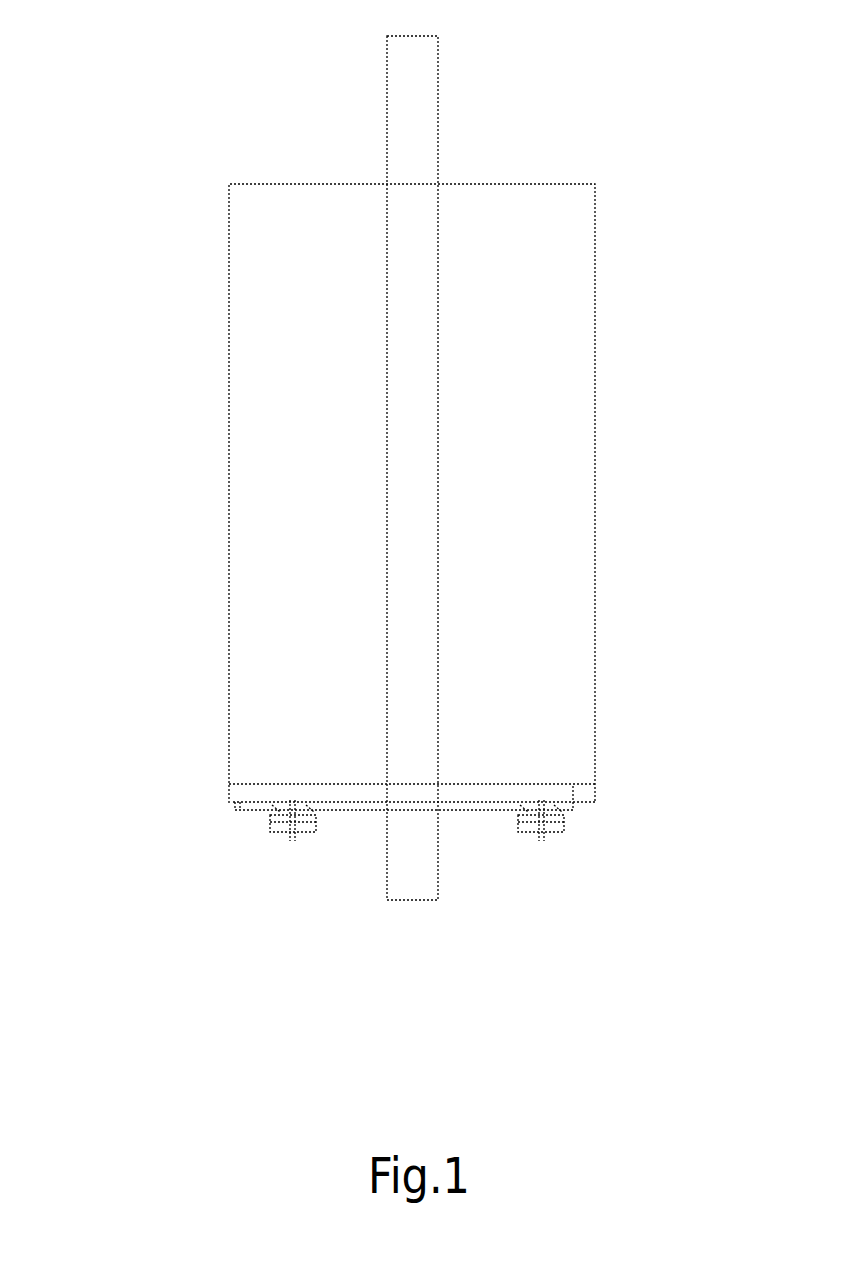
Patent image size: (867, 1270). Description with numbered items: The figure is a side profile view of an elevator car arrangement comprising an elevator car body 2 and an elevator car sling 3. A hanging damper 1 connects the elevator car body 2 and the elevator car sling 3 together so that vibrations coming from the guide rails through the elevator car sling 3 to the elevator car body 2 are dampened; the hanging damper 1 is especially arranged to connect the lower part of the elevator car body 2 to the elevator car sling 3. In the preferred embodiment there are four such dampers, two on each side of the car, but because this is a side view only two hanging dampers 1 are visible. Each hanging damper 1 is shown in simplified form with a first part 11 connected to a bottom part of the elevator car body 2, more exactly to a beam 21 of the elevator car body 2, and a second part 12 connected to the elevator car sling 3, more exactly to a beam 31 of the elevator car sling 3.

The hanging damper 1 is at (344, 849).
The first part 11 is at (237, 793).
The second part 12 is at (318, 812).
The elevator car body 2 is at (275, 320).
The beam 21 is at (255, 806).
The elevator car sling 3 is at (415, 220).
The beam 31 is at (250, 810).